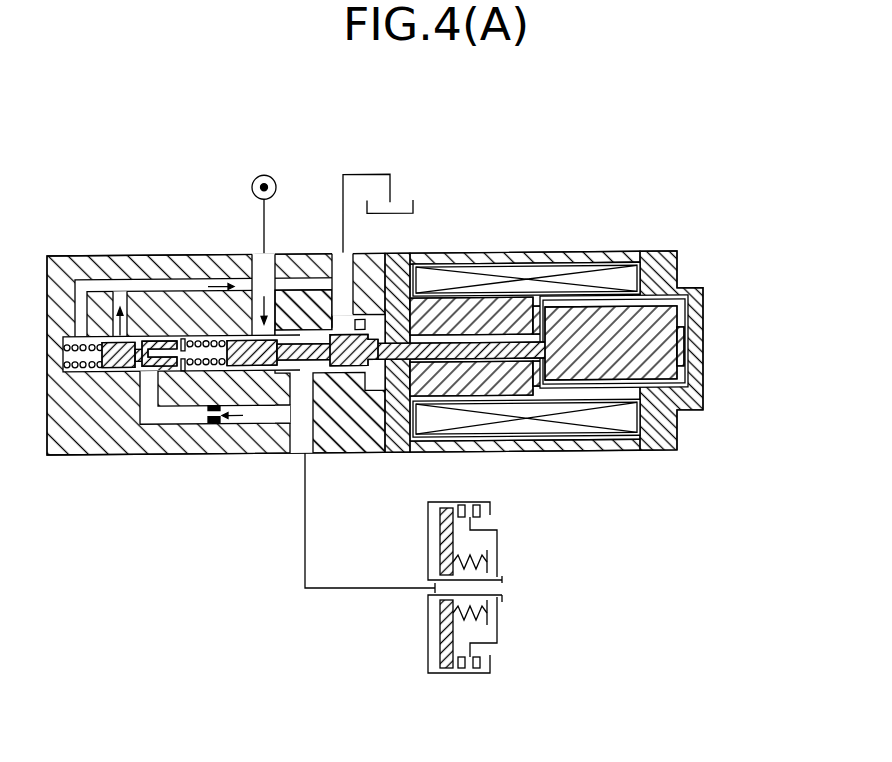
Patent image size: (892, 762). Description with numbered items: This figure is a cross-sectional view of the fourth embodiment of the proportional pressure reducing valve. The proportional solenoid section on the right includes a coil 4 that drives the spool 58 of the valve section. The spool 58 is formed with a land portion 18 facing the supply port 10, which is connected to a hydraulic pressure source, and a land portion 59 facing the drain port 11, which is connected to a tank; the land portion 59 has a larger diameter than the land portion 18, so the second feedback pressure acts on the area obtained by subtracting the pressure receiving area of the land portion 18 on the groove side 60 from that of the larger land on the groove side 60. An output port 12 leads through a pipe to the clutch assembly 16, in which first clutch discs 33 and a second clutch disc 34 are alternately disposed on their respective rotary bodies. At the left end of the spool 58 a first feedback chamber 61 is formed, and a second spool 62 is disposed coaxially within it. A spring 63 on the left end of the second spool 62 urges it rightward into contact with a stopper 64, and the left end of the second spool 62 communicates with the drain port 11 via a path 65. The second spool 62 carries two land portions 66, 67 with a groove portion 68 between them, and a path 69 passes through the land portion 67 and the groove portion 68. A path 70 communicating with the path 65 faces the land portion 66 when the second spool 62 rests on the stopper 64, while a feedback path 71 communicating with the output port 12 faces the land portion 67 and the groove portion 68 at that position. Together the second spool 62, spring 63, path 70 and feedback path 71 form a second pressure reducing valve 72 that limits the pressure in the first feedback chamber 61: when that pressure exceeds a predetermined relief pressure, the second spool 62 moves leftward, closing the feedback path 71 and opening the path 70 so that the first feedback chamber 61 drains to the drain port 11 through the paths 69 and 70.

The coil 4 is at (531, 274).
The supply port 10 is at (258, 265).
The drain port 11 is at (340, 262).
The output port 12 is at (308, 457).
The clutch assembly 16 is at (517, 583).
The land portion 18 is at (253, 369).
The first clutch discs 33 is at (477, 669).
The second clutch disc 34 is at (472, 653).
The spool 58 is at (352, 456).
The land portion 59 is at (297, 315).
The groove side 60 is at (285, 415).
The first feedback chamber 61 is at (200, 359).
The second spool 62 is at (120, 370).
The spring 63 is at (83, 373).
The stopper 64 is at (187, 336).
The path 65 is at (152, 288).
The land portion 66 is at (100, 373).
The land portion 67 is at (158, 368).
The groove portion 68 is at (143, 368).
The path 69 is at (170, 373).
The path 70 is at (122, 318).
The feedback path 71 is at (183, 414).
The second pressure reducing valve 72 is at (168, 328).